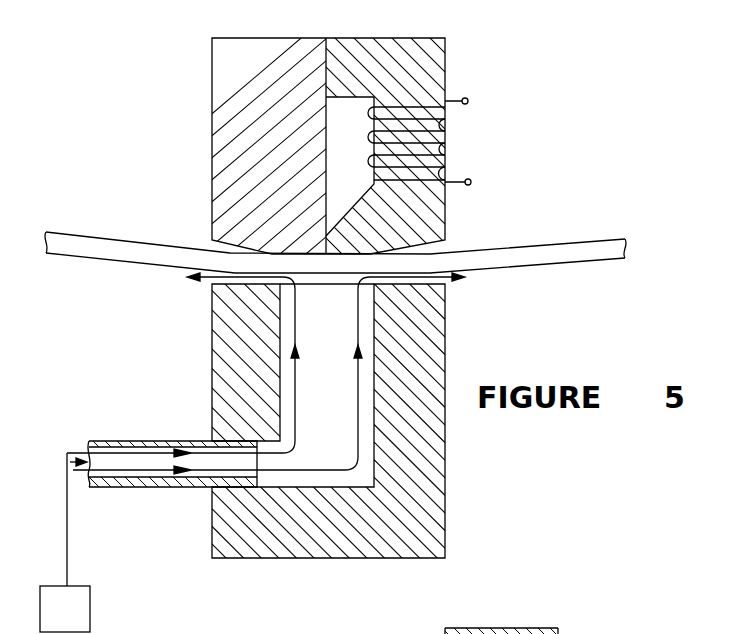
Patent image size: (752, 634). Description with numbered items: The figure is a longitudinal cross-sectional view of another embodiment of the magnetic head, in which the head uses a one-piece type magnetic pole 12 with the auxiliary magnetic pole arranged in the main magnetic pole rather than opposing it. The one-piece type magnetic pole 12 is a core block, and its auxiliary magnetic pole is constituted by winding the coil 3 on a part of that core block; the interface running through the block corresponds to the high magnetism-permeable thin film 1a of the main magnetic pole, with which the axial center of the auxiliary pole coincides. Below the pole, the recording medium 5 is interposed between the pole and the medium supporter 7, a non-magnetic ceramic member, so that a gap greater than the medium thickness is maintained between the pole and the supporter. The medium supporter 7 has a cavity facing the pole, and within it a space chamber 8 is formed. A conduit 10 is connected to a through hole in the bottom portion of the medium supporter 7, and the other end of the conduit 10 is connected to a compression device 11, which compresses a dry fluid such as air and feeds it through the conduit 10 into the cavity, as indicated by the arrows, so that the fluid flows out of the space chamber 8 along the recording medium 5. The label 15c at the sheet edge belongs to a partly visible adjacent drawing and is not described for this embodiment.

The high magnetism-permeable thin film 1a is at (326, 38).
The coil 3 is at (463, 101).
The recording medium 5 is at (532, 258).
The medium supporter 7 is at (232, 358).
The space chamber 8 is at (343, 330).
The conduit 10 is at (122, 489).
The compression device 11 is at (90, 606).
The one-piece type magnetic pole 12 is at (283, 67).
The adjacent figure fragment 15c is at (380, 627).